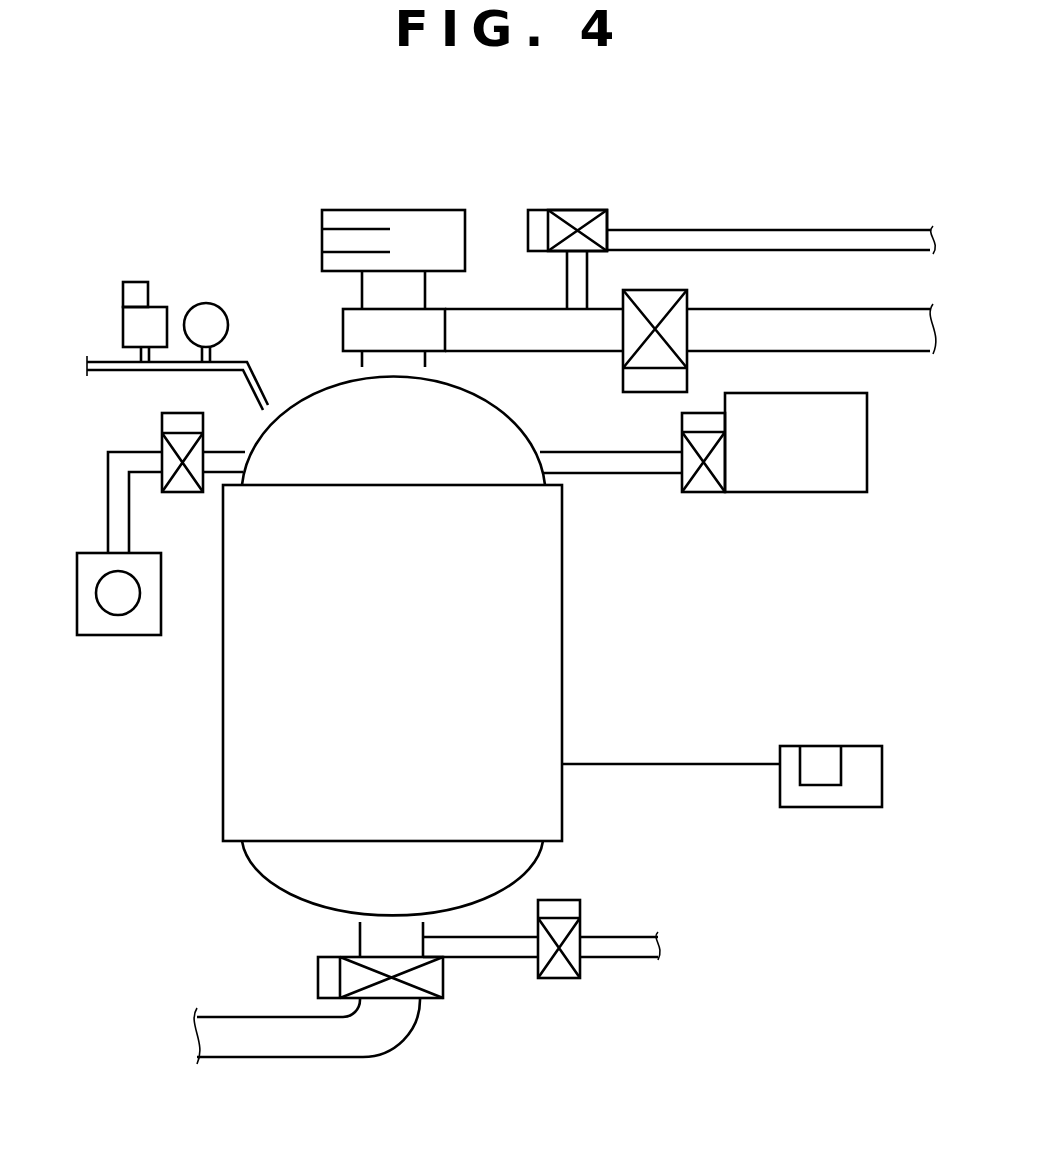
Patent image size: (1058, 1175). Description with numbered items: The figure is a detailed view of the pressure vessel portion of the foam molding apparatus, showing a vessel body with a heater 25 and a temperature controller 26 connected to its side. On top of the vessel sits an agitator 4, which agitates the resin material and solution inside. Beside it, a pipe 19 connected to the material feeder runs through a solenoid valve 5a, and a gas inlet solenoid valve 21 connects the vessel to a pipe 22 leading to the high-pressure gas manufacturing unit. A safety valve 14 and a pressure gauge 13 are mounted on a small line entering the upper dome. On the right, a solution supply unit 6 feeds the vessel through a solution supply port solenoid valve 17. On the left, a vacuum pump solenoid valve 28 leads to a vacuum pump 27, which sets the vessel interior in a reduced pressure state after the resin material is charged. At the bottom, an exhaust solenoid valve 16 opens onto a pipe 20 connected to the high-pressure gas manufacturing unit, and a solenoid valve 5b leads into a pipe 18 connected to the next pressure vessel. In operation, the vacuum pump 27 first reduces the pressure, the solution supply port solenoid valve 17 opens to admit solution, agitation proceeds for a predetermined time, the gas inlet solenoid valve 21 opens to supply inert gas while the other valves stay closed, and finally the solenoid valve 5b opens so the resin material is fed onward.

The agitator 4 is at (392, 220).
The gas inlet solenoid valve 21 is at (574, 220).
The pipe connected to the high-pressure gas manufacturing unit 22 is at (824, 240).
The solenoid valve 5a is at (687, 300).
The pipe connected to the material feeder 19 is at (902, 340).
The solution supply unit 6 is at (796, 480).
The solution supply port solenoid valve 17 is at (706, 480).
The safety valve 14 is at (160, 322).
The pressure gauge 13 is at (210, 322).
The vacuum pump solenoid valve 28 is at (168, 442).
The vacuum pump 27 is at (117, 602).
The heater 25 is at (230, 783).
The temperature controller 26 is at (819, 757).
The exhaust solenoid valve 16 is at (581, 926).
The pipe connected to the high-pressure gas manufacturing unit 20 is at (617, 950).
The solenoid valve 5b is at (318, 975).
The pipe connected to the pressure vessel 18 is at (274, 1046).